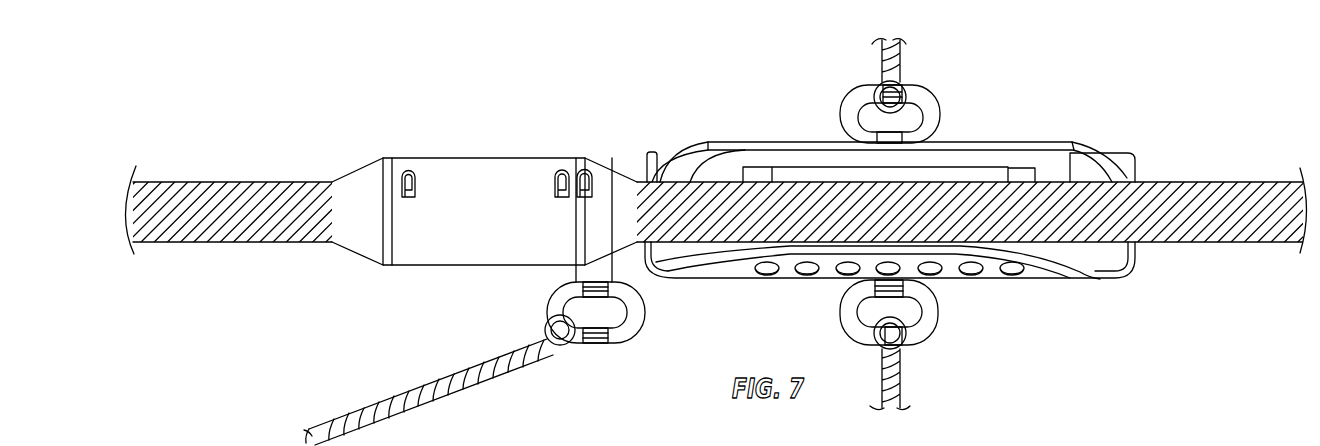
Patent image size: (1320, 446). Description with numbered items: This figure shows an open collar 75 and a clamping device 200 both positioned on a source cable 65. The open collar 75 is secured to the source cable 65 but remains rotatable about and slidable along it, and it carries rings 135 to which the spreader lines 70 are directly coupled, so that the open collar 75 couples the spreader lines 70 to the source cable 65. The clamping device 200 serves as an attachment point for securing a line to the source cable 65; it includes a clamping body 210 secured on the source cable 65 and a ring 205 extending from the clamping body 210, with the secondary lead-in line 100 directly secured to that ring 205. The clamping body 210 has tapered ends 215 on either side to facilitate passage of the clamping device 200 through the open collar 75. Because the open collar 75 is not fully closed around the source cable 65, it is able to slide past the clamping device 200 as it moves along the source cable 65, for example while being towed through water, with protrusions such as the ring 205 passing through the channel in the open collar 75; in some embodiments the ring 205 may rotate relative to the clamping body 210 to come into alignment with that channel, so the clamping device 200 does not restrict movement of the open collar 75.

The source cable 65 is at (1212, 182).
The spreader lines 70 is at (880, 70).
The open collar 75 is at (1048, 136).
The secondary lead-in line 100 is at (424, 383).
The rings 135 is at (941, 105).
The clamping device 200 is at (487, 199).
The ring 205 is at (547, 312).
The clamping body 210 is at (506, 158).
The tapered ends 215 is at (360, 166).